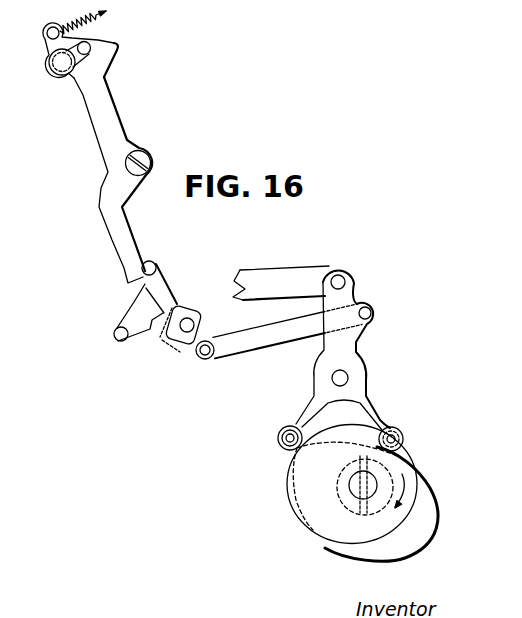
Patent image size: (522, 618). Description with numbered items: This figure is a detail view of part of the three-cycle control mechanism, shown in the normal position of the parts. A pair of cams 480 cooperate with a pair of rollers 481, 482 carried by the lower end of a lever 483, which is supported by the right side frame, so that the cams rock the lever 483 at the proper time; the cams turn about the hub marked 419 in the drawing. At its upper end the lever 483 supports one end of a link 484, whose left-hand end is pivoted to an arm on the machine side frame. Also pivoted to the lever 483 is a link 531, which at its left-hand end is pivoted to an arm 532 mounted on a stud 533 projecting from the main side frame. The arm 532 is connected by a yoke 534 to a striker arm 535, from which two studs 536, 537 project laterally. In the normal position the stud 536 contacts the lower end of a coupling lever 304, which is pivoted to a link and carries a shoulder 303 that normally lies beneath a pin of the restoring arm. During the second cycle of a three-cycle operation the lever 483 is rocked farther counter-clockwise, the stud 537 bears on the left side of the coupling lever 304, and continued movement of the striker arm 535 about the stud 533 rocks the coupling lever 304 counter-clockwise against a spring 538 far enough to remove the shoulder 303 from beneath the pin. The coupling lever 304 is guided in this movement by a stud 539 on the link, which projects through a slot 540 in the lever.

The spring 538 is at (108, 12).
The slot 540 is at (120, 46).
The stud 539 is at (62, 62).
The shoulder 303 is at (105, 76).
The coupling lever 304 is at (114, 108).
The stud 536 is at (151, 259).
The stud 537 is at (116, 325).
The striker arm 535 is at (145, 348).
The yoke 534 is at (176, 354).
The arm 532 is at (209, 289).
The stud 533 is at (194, 326).
The link 531 is at (239, 348).
The link 484 is at (296, 261).
The lever 483 is at (355, 348).
The roller 481 is at (290, 426).
The roller 482 is at (393, 427).
The shaft 419 is at (371, 495).
The cams 480 is at (325, 548).